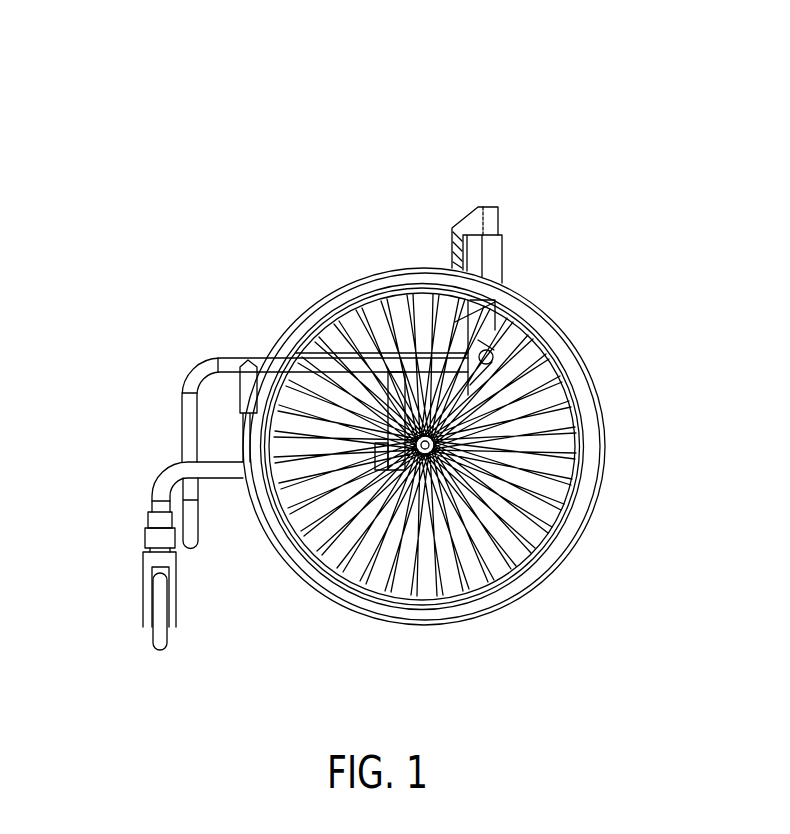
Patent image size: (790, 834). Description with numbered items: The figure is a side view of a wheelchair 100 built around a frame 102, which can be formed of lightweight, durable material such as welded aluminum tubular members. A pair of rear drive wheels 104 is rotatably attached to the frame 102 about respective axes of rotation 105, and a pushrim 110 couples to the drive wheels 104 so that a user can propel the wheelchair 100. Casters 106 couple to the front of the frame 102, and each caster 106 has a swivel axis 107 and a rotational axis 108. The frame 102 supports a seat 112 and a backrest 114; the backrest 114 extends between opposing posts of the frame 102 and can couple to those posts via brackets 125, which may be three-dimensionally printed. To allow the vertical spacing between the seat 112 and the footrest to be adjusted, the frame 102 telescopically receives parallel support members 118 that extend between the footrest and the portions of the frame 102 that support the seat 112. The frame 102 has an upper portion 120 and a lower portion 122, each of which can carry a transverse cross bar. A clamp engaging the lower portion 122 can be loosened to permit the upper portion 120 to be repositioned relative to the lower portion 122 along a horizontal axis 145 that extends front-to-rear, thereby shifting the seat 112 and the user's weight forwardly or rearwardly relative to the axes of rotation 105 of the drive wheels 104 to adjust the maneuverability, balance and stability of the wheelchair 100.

The wheelchair 100 is at (140, 203).
The frame 102 is at (237, 363).
The rear drive wheels 104 is at (602, 468).
The axes of rotation 105 is at (563, 528).
The casters 106 is at (169, 638).
The swivel axes 107 is at (160, 675).
The rotational axes 108 is at (228, 612).
The pushrim 110 is at (572, 405).
The seat 112 is at (290, 280).
The backrest 114 is at (490, 225).
The parallel support members 118 is at (199, 510).
The upper portion of the frame 120 is at (188, 375).
The lower portion of the frame 122 is at (152, 480).
The brackets 125 is at (500, 250).
The horizontal axis 145 is at (430, 101).